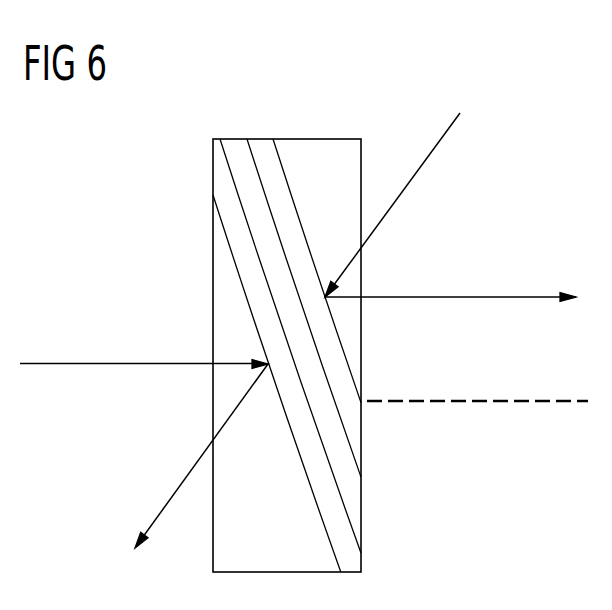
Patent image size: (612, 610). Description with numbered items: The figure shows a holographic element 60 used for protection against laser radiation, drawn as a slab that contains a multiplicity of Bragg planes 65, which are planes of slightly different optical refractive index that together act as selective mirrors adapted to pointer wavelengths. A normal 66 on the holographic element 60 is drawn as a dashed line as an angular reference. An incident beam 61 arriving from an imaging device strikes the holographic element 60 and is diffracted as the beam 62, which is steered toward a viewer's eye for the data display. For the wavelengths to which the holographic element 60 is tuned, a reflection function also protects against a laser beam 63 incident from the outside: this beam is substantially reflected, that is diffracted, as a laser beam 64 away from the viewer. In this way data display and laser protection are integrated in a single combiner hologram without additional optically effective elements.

The holographic element 60 is at (297, 139).
The incident beam 61 is at (439, 142).
The diffracted beam 62 is at (450, 297).
The laser beam 63 is at (108, 362).
The reflected laser beam 64 is at (185, 478).
The Bragg planes 65 is at (346, 499).
The normal 66 is at (478, 398).